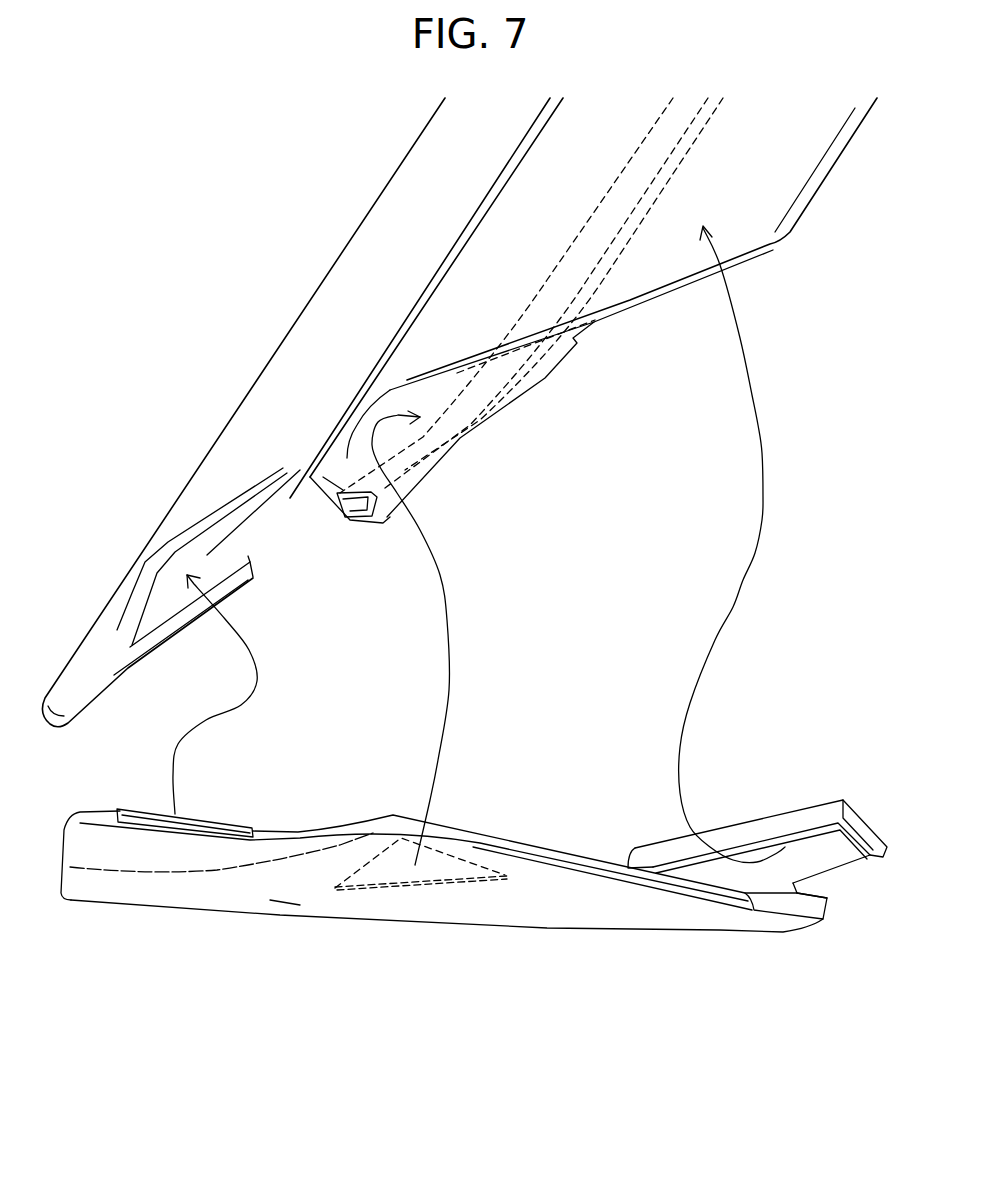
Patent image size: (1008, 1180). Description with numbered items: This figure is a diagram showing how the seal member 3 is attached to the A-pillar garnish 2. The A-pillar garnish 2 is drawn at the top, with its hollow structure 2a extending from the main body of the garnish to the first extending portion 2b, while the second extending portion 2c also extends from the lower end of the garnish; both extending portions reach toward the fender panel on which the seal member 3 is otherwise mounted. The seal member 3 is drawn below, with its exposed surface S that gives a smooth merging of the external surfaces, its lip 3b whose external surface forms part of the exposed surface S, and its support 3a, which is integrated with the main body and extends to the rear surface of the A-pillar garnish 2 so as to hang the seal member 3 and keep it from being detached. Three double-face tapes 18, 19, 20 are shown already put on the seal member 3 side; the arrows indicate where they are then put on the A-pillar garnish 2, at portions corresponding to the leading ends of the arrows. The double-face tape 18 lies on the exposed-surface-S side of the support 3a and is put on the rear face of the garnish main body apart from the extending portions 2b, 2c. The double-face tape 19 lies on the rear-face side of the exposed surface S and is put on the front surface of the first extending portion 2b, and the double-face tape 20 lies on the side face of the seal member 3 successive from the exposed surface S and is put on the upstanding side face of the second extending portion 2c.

The A-pillar garnish 2 is at (322, 270).
The hollow structure 2a is at (593, 237).
The first extending portion 2b is at (346, 467).
The second extending portion 2c is at (207, 555).
The seal member 3 is at (545, 932).
The support 3a is at (775, 822).
The lip 3b is at (720, 928).
The double-face tape 18 is at (840, 860).
The double-face tape 19 is at (440, 873).
The double-face tape 20 is at (143, 812).
The exposed surface S is at (280, 886).